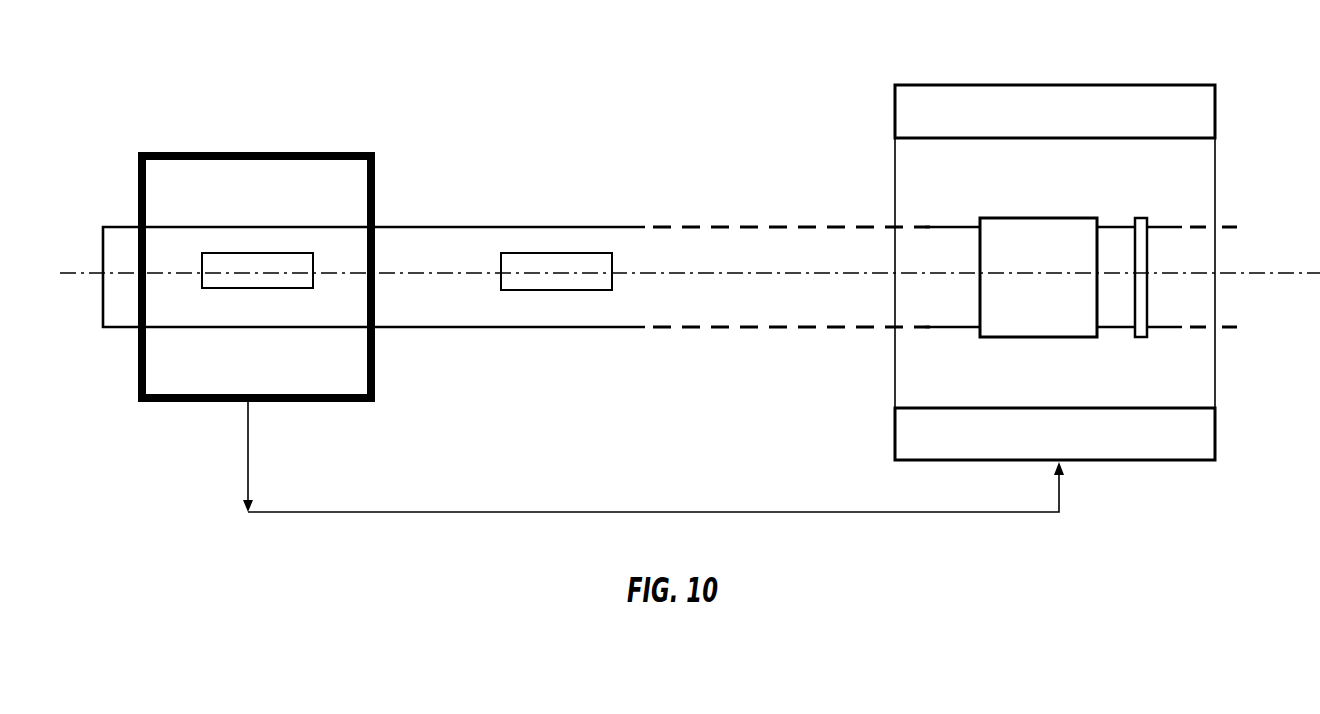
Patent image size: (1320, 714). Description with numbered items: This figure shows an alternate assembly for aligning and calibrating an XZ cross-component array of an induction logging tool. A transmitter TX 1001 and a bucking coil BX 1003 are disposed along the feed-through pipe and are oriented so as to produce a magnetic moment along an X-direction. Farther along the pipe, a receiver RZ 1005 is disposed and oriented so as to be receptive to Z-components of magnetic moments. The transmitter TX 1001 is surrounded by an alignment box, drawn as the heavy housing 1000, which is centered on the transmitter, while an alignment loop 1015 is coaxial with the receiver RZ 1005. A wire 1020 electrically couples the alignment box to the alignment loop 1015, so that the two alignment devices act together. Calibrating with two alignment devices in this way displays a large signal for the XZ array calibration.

The transmitter housing (TX) 1000 is at (292, 153).
The transmitter TX 1001 is at (232, 265).
The bucking coil BX 1003 is at (583, 263).
The receiver RZ 1005 is at (1070, 308).
The alignment loop 1015 is at (1128, 97).
The wire 1020 is at (840, 512).